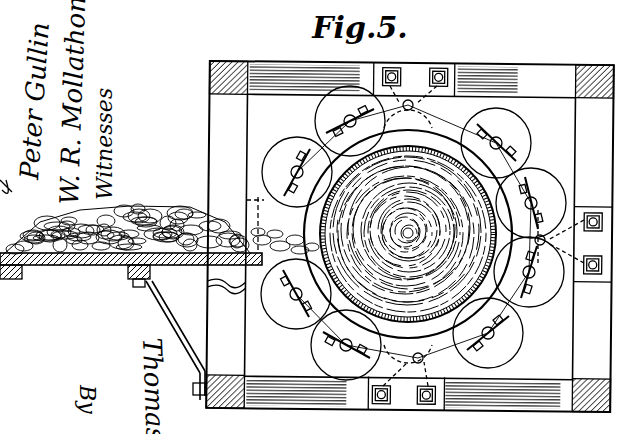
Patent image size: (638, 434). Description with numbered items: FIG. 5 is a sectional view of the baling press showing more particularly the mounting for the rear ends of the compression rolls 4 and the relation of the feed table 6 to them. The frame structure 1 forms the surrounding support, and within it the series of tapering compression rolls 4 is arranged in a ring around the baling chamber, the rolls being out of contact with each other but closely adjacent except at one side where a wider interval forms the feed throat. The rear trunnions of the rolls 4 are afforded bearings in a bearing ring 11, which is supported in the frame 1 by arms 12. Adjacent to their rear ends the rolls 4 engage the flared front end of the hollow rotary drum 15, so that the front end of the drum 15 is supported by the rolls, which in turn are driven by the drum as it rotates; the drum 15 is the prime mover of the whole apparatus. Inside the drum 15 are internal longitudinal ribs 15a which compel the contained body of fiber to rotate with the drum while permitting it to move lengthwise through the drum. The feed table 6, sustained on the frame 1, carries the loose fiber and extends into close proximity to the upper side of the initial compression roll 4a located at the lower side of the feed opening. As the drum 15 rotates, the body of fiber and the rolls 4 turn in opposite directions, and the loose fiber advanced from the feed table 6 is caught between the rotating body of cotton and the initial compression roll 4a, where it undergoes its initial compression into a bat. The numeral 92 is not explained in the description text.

The frame 1 is at (510, 64).
The roller 4 is at (318, 121).
The roller 4a is at (292, 314).
The feed table 6 is at (97, 265).
The connecting link 11 is at (503, 166).
The adjusting clamp 12 is at (488, 237).
The drum ring 15 is at (408, 234).
The material 15a is at (408, 234).
The bracket 92 is at (606, 412).